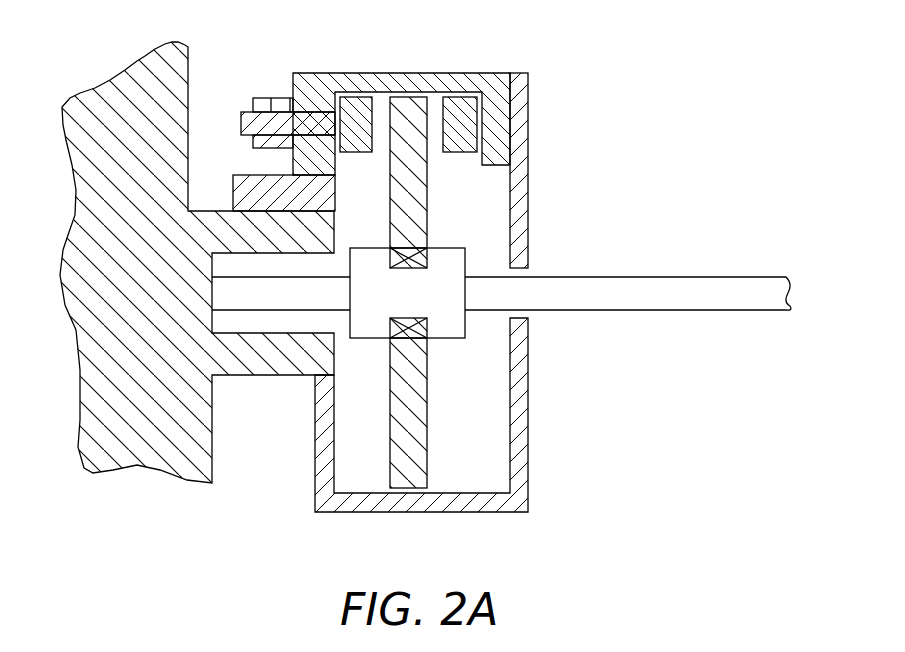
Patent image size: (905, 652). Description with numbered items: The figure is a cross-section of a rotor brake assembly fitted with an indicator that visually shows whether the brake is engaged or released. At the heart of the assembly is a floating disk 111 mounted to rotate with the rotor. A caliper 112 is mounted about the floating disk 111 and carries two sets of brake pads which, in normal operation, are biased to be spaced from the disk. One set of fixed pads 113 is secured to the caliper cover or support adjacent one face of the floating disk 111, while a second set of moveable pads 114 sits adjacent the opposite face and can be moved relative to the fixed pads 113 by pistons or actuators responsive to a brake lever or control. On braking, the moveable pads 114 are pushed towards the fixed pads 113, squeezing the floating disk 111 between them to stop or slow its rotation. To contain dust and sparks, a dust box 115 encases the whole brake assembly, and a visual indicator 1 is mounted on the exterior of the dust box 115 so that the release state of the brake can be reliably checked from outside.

The visual indicator 1 is at (262, 80).
The floating disk 111 is at (403, 493).
The caliper 112 is at (480, 74).
The fixed pads 113 is at (460, 153).
The moveable pads 114 is at (352, 97).
The dust box 115 is at (528, 380).